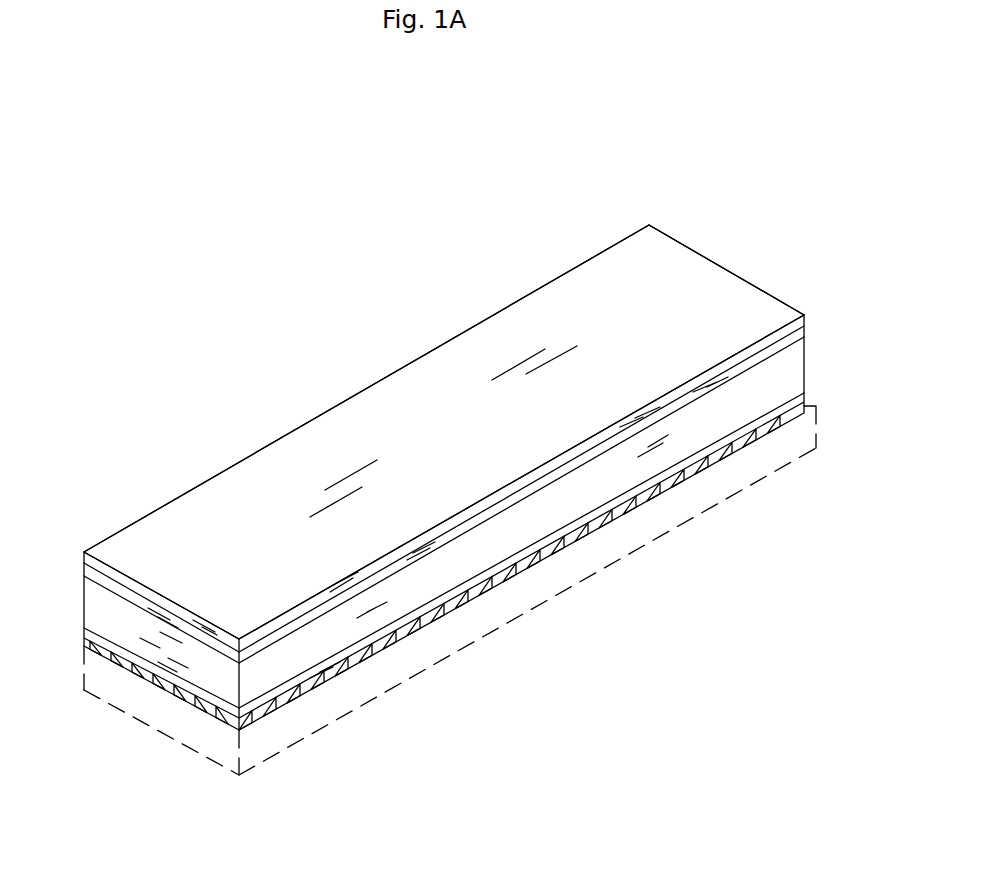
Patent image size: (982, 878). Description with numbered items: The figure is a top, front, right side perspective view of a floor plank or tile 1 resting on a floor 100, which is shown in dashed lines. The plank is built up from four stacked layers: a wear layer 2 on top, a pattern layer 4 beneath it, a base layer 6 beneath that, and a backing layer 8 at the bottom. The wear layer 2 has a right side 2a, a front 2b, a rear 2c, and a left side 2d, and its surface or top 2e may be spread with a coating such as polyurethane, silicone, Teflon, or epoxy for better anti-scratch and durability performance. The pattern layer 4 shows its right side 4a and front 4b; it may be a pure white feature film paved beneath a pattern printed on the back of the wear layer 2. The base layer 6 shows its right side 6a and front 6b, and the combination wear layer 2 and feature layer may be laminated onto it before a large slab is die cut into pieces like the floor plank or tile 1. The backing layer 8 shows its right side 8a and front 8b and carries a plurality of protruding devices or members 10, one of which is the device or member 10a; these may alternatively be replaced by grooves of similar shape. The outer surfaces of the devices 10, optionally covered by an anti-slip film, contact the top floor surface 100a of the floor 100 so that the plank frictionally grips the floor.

The floor plank or tile 1 is at (446, 223).
The wear layer 2 is at (444, 429).
The right side of wear layer 2a is at (727, 365).
The front of wear layer 2b is at (117, 575).
The rear of wear layer 2c is at (702, 255).
The left side of wear layer 2d is at (340, 403).
The surface or top of wear layer 2e is at (440, 383).
The pattern layer 4 is at (448, 467).
The right side of pattern layer 4a is at (772, 350).
The front of pattern layer 4b is at (137, 602).
The base layer 6 is at (444, 571).
The right side of base layer 6a is at (732, 403).
The front of base layer 6b is at (217, 680).
The backing layer 8 is at (444, 576).
The right side of backing layer 8a is at (521, 561).
The front of backing layer 8b is at (135, 660).
The protruding devices or members 10 is at (482, 595).
The protruding device or member 10a is at (507, 578).
The floor 100 is at (450, 614).
The top floor surface 100a is at (283, 710).